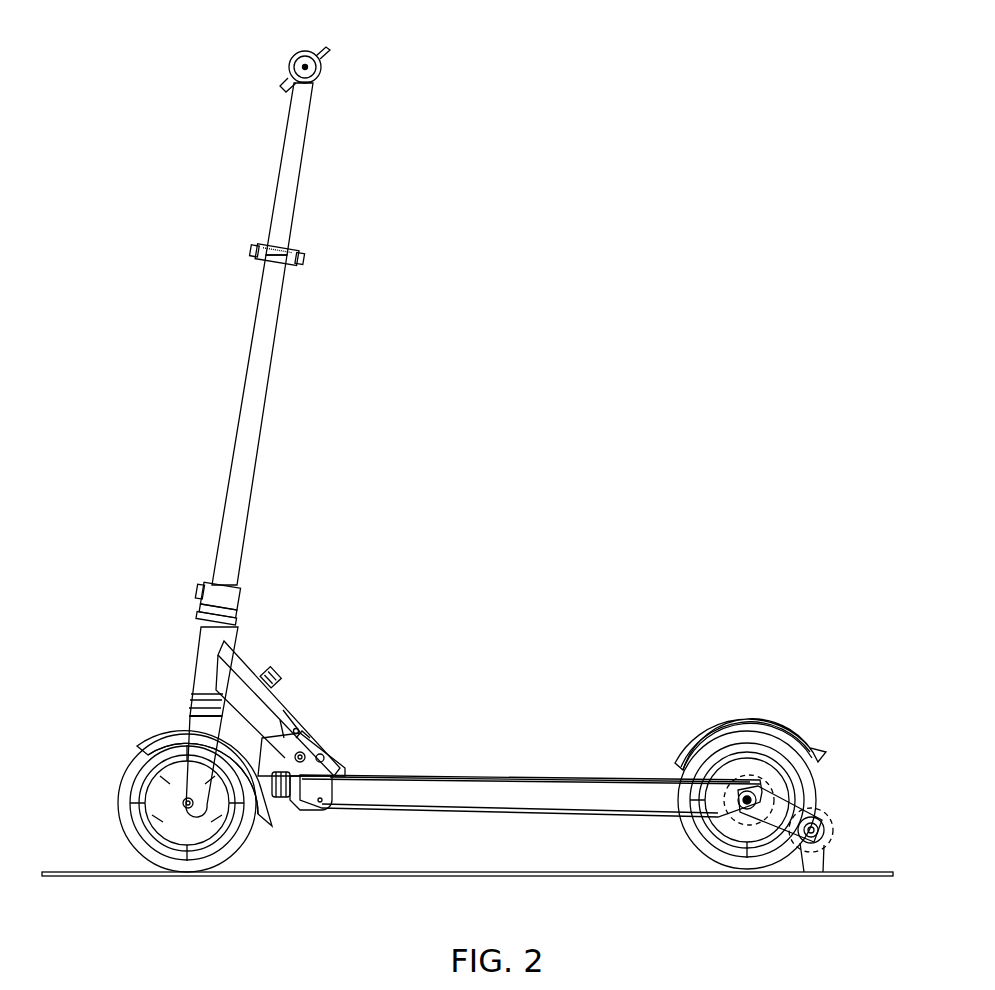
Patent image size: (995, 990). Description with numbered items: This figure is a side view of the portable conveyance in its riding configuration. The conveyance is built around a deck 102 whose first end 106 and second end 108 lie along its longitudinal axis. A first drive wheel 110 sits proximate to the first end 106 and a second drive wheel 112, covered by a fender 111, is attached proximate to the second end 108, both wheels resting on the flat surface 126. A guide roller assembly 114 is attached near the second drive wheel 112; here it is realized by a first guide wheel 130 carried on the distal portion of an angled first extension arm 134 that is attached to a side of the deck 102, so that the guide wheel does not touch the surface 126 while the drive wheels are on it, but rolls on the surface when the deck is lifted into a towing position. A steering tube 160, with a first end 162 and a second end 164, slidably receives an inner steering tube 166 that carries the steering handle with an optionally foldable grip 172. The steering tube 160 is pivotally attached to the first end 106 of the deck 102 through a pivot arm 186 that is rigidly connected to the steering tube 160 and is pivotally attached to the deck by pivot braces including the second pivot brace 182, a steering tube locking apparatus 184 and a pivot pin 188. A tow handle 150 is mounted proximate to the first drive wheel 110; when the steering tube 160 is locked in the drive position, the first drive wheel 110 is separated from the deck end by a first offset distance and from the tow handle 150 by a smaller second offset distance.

The deck 102 is at (447, 776).
The first end 106 is at (318, 792).
The second end 108 is at (603, 782).
The first drive wheel 110 is at (120, 803).
The fender 111 is at (747, 720).
The second drive wheel 112 is at (814, 786).
The guide roller assembly 114 is at (818, 858).
The flat surface 126 is at (404, 871).
The first guide wheel 130 is at (826, 832).
The first extension arm 134 is at (777, 822).
The tow handle 150 is at (286, 798).
The steering tube 160 is at (264, 424).
The first end 162 is at (190, 698).
The second end 164 is at (300, 260).
The inner steering tube 166 is at (290, 180).
The foldable grip 172 is at (322, 76).
The second pivot brace 182 is at (324, 760).
The steering tube locking apparatus 184 is at (300, 742).
The pivot arm 186 is at (246, 664).
The pivot pin 188 is at (306, 752).